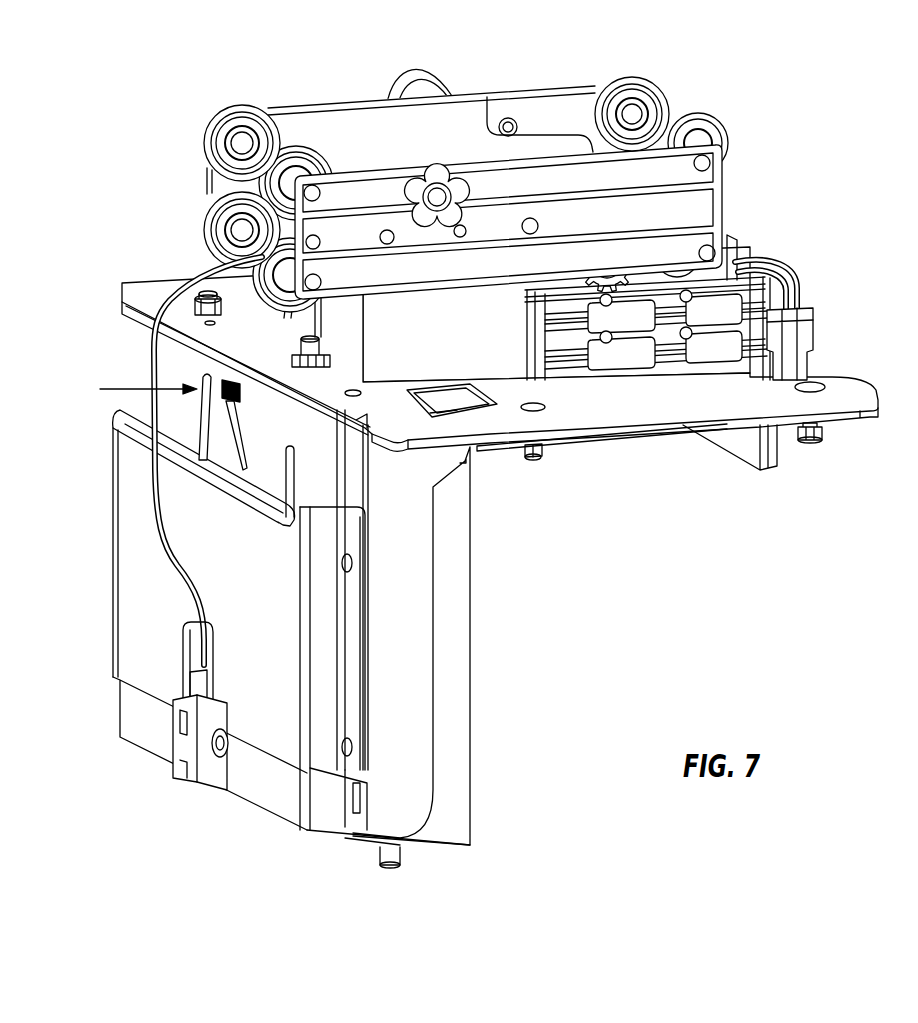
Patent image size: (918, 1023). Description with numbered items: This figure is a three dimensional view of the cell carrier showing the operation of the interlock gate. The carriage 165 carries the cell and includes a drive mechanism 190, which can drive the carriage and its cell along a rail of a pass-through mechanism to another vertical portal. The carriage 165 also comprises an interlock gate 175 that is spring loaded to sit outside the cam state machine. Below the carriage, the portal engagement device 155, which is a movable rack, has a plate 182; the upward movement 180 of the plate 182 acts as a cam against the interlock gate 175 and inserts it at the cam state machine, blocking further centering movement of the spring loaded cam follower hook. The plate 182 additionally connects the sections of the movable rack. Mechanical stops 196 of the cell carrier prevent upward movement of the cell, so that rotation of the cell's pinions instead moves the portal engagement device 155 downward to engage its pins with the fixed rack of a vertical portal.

The portal engagement device 155 is at (317, 840).
The carriage 165 is at (138, 238).
The interlock gate 175 is at (243, 397).
The upward movement 180 is at (138, 703).
The plate 182 is at (112, 500).
The drive mechanism 190 is at (580, 86).
The mechanical stops 196 is at (547, 450).